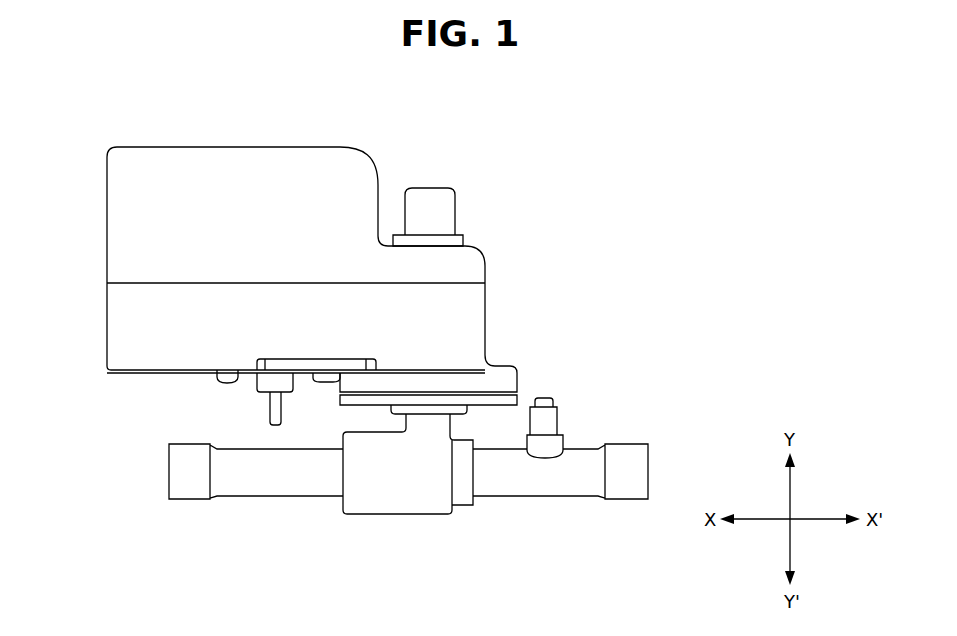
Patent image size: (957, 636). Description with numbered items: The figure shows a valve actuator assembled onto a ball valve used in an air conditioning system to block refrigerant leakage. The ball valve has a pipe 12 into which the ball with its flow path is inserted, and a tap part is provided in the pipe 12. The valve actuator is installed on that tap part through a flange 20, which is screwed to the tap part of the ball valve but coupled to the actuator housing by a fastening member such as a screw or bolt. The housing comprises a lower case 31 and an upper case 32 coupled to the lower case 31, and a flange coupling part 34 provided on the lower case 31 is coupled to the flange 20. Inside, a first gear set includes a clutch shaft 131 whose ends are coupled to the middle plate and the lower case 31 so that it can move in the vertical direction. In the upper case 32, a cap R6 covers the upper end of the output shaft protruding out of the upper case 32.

The pipe 12 is at (405, 515).
The flange 20 is at (517, 398).
The lower case 31 is at (115, 327).
The upper case 32 is at (115, 229).
The flange coupling part 34 is at (517, 374).
The clutch shaft 131 is at (272, 409).
The cap R6 is at (425, 197).